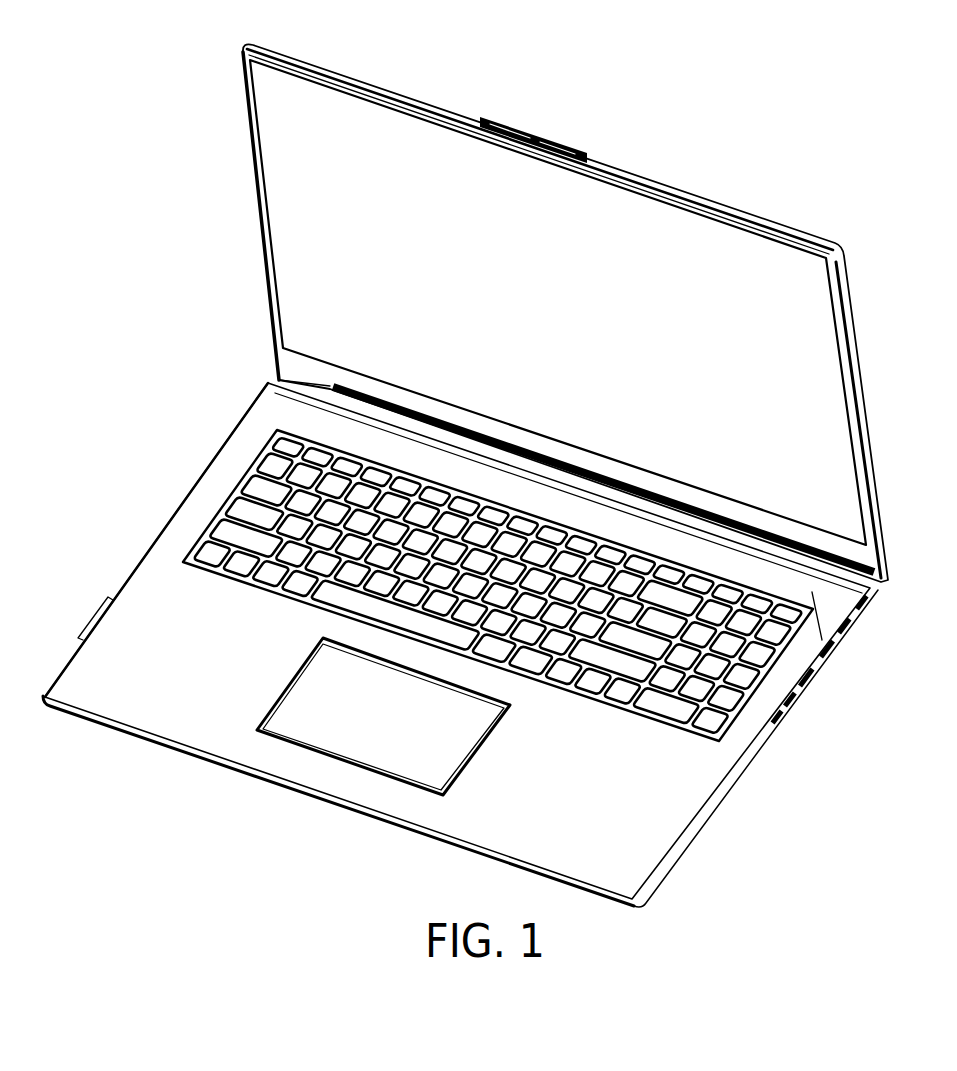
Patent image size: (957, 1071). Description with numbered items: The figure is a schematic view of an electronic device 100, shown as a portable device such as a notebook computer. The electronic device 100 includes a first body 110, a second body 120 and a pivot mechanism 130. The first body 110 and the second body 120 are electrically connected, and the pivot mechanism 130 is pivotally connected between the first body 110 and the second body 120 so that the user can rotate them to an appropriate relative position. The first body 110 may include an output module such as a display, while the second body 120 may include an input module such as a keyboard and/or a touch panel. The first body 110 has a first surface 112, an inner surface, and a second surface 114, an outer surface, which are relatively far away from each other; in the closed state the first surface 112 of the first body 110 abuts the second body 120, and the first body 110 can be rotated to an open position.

The electronic device 100 is at (495, 475).
The first body 110 is at (591, 313).
The first surface 112 is at (797, 323).
The second surface 114 is at (852, 288).
The second body 120 is at (495, 643).
The pivot mechanism 130 is at (807, 558).